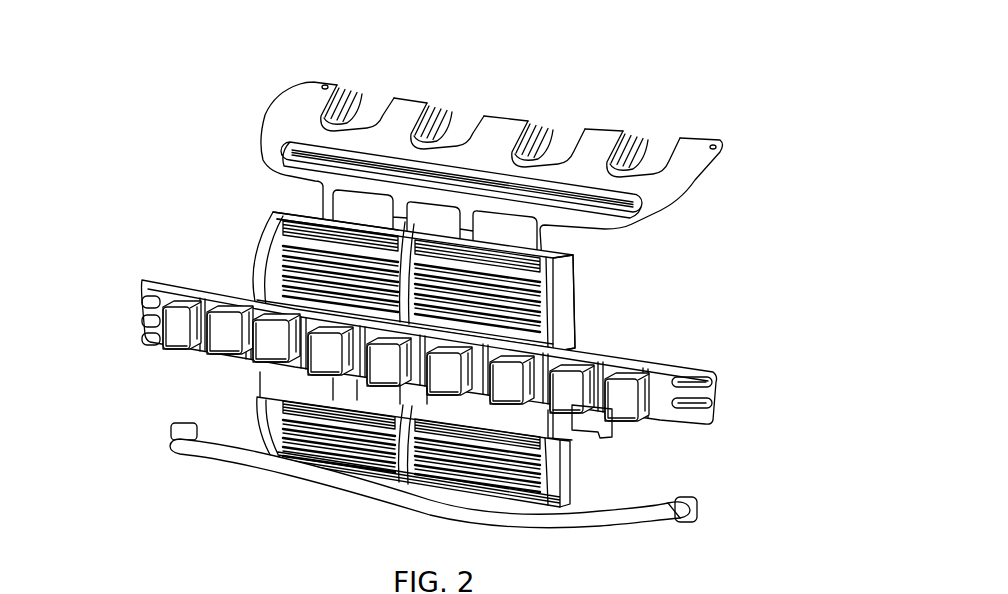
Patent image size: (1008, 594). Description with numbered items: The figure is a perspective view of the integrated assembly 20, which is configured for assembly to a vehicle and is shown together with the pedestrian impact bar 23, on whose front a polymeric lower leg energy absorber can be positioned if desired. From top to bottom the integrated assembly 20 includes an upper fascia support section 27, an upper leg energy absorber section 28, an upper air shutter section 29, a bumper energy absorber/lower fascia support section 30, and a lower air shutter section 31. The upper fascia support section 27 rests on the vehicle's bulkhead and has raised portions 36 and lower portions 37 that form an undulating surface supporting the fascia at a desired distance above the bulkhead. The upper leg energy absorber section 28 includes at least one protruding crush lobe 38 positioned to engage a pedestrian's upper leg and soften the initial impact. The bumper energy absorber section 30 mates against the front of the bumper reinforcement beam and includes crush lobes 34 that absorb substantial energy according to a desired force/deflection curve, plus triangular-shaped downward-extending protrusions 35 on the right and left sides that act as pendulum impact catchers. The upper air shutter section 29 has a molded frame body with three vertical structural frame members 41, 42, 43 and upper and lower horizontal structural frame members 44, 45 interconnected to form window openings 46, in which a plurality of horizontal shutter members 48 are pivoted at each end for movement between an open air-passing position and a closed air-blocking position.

The integrated assembly 20 is at (138, 141).
The pedestrian impact bar 23 is at (160, 450).
The upper fascia support section 27 is at (716, 124).
The upper leg energy absorber section 28 is at (284, 121).
The upper air shutter section 29 is at (256, 210).
The bumper energy absorber/lower fascia support section 30 is at (680, 353).
The lower air shutter section 31 is at (258, 434).
The crush lobes 34 is at (262, 346).
The triangular-shaped downward-extending protrusions 35 is at (593, 428).
The raised portions 36 is at (623, 134).
The lower portions 37 is at (660, 153).
The protruding crush lobe 38 is at (272, 146).
The vertical structural frame member 41 is at (568, 309).
The vertical structural frame member 42 is at (423, 237).
The vertical structural frame member 43 is at (270, 221).
The upper horizontal structural frame member 44 is at (300, 216).
The lower horizontal structural frame member 45 is at (515, 334).
The window opening 46 is at (290, 276).
The horizontal shutter members 48 is at (515, 282).